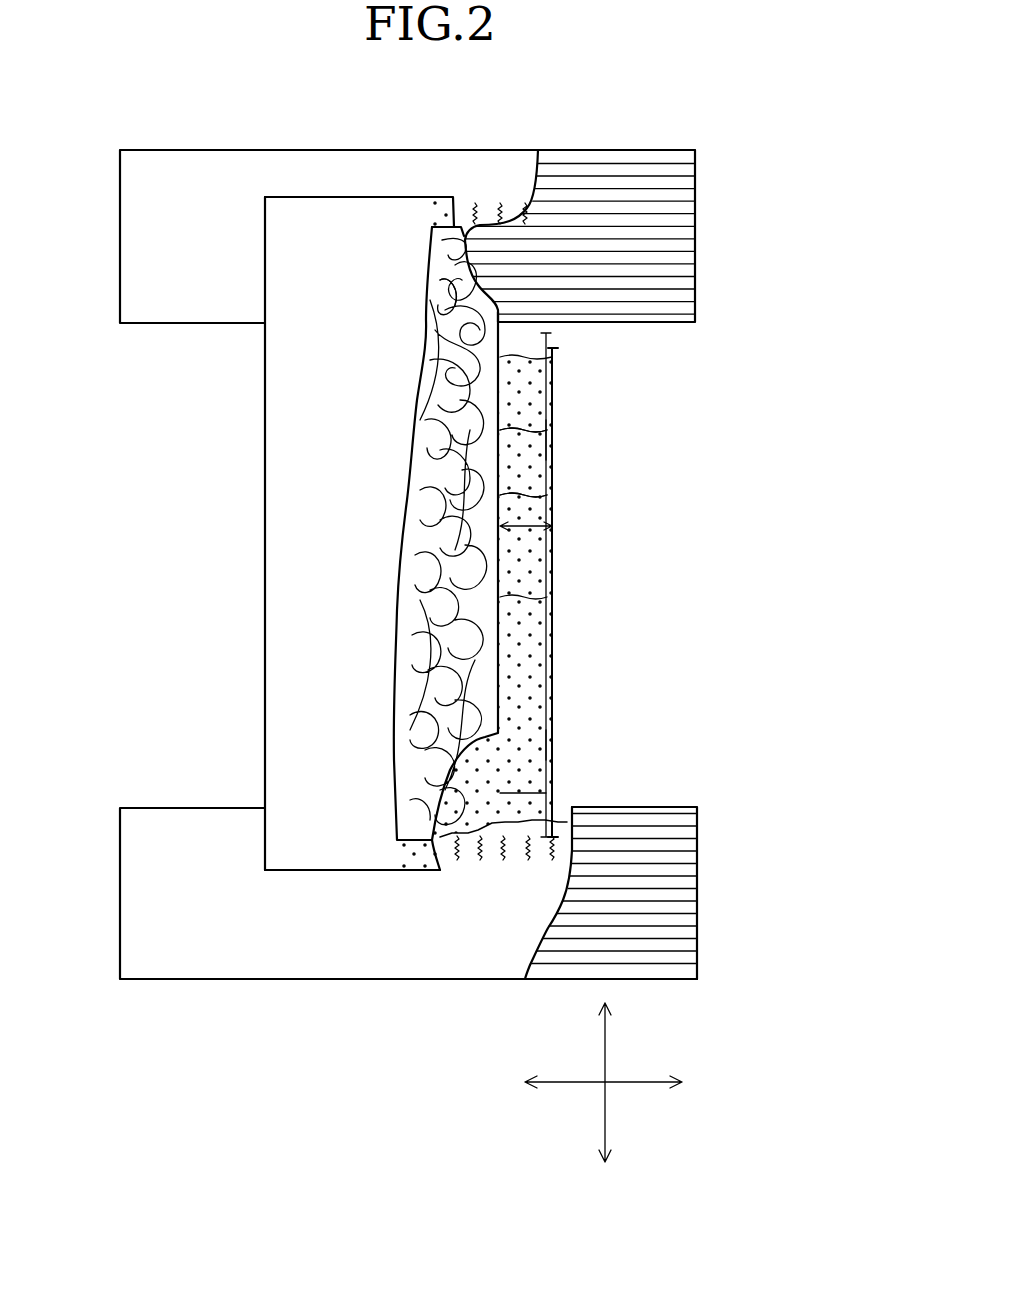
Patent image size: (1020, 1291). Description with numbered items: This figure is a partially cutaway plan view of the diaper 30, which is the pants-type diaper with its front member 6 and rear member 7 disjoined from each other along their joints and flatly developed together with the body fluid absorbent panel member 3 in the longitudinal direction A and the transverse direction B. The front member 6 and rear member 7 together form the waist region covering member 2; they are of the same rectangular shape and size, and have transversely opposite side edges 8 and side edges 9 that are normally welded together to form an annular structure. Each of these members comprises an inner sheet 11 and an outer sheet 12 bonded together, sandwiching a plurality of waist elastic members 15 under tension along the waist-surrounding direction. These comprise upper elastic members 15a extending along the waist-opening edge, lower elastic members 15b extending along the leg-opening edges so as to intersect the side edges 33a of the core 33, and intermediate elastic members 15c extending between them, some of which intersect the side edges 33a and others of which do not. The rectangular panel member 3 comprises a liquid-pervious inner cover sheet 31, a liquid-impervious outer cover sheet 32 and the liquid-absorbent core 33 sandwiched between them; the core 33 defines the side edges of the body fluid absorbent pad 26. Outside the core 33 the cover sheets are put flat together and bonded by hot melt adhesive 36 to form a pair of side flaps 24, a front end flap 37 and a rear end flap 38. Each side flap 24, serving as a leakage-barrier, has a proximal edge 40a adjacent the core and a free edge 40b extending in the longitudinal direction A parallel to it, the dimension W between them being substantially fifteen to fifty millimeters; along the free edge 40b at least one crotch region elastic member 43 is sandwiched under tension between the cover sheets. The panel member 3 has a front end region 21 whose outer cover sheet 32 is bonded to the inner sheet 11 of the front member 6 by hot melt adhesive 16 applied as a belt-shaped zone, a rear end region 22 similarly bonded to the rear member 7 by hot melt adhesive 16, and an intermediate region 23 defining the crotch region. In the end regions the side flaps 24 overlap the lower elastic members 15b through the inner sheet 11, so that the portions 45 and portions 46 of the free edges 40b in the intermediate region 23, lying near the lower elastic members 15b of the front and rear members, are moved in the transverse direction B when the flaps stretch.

The waist region covering member 2 is at (408, 568).
The front member 6 is at (408, 893).
The rear member 7 is at (329, 236).
The body fluid absorbent panel member 3 is at (252, 420).
The side edges 8 is at (132, 906).
The side edges 9 is at (135, 221).
The inner sheet 11 is at (405, 158).
The outer sheet 12 is at (593, 157).
The waist elastic members 15 is at (648, 567).
The upper elastic members 15a is at (673, 148).
The lower elastic members 15b is at (660, 322).
The intermediate elastic members 15c is at (665, 290).
The hot melt adhesive 16 is at (506, 208).
The front end region 21 is at (294, 862).
The rear end region 22 is at (285, 243).
The intermediate region 23 is at (378, 510).
The side flaps 24 is at (290, 556).
The body fluid absorbent pad 26 is at (335, 476).
The diaper 30 is at (696, 93).
The inner cover sheet 31 is at (283, 371).
The outer cover sheet 32 is at (528, 406).
The core 33 is at (490, 594).
The side edges 33a is at (547, 437).
The hot melt adhesive 36 is at (538, 692).
The front end flap 37 is at (362, 858).
The rear end flap 38 is at (290, 205).
The proximal edge 40a is at (320, 659).
The free edge 40b is at (280, 711).
The crotch region elastic member 43 is at (550, 755).
The portions 45 is at (282, 790).
The portions 46 is at (278, 337).
The dimension W is at (535, 530).
The longitudinal direction A is at (607, 1034).
The transverse direction B is at (640, 1083).